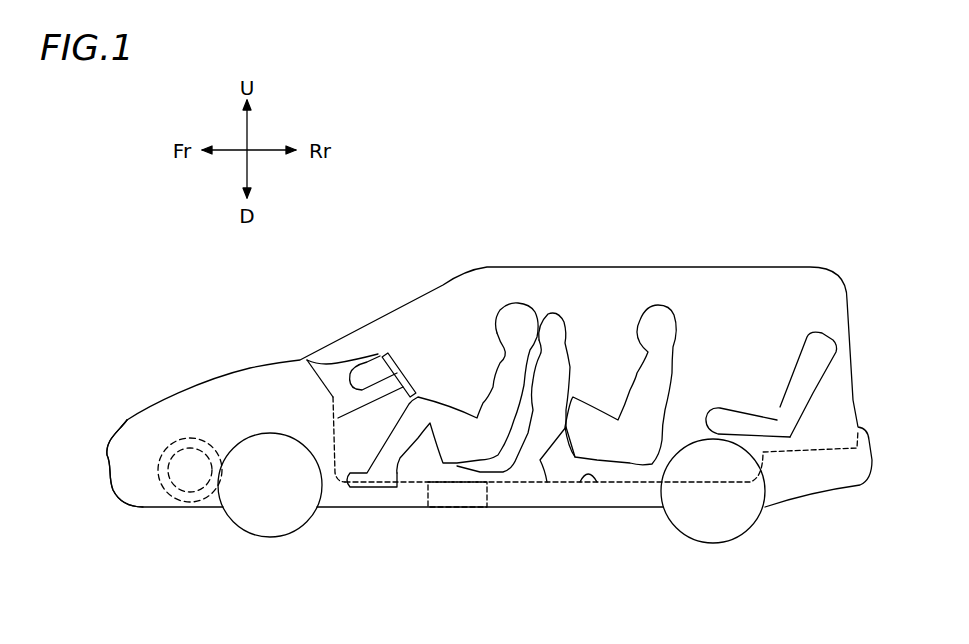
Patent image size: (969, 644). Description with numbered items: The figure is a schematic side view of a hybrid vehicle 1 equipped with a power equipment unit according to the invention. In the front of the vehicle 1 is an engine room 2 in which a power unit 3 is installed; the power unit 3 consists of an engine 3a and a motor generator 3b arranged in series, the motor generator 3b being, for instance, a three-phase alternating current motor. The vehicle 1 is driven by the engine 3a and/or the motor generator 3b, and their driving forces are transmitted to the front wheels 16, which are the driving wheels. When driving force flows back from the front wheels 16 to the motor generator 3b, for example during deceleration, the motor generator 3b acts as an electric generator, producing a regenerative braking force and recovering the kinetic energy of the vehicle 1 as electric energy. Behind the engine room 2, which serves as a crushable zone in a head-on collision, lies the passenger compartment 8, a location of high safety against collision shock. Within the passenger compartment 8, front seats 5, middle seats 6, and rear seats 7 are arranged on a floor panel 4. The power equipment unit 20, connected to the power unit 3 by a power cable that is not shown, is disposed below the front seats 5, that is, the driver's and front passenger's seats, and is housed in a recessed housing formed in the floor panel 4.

The vehicle 1 is at (561, 214).
The engine room 2 is at (148, 446).
The power unit 3 is at (180, 455).
The engine 3a is at (160, 503).
The motor generator 3b is at (192, 505).
The floor panel 4 is at (586, 474).
The front seats 5 is at (523, 433).
The middle seats 6 is at (655, 467).
The rear seats 7 is at (797, 397).
The passenger compartment 8 is at (600, 326).
The front wheels 16 is at (267, 517).
The power equipment unit 20 is at (440, 509).